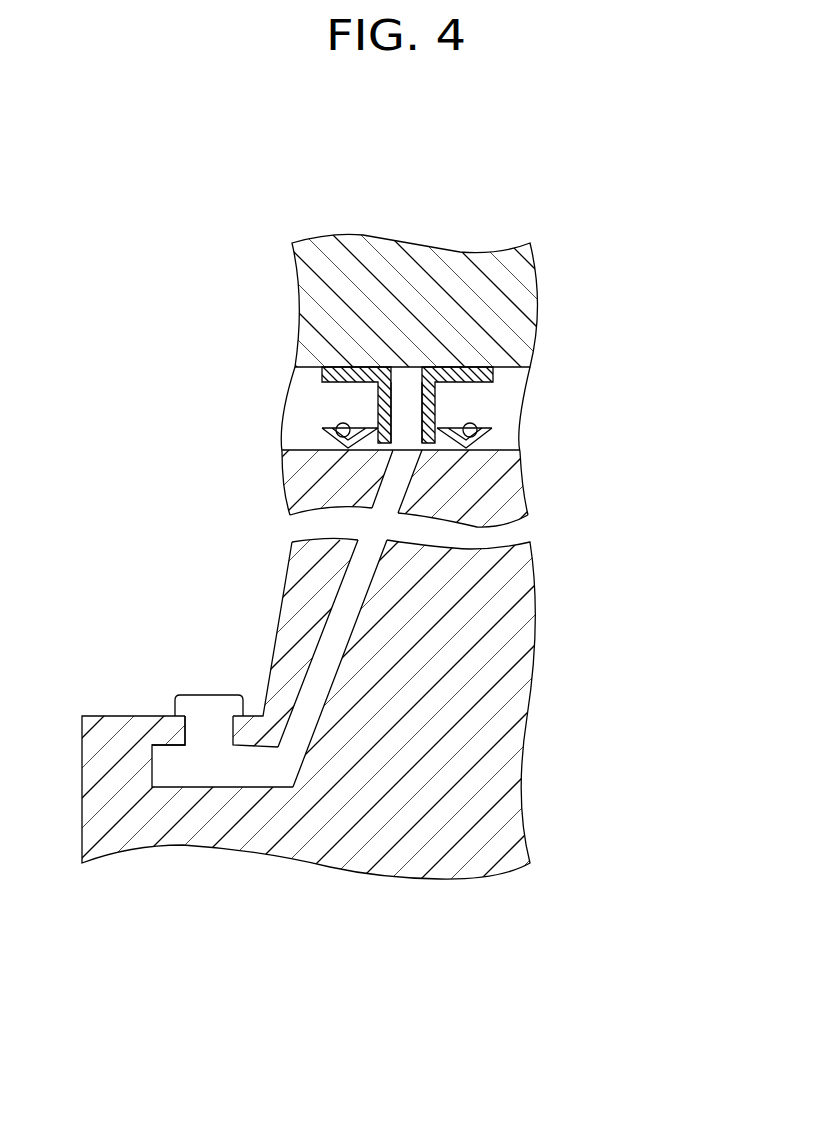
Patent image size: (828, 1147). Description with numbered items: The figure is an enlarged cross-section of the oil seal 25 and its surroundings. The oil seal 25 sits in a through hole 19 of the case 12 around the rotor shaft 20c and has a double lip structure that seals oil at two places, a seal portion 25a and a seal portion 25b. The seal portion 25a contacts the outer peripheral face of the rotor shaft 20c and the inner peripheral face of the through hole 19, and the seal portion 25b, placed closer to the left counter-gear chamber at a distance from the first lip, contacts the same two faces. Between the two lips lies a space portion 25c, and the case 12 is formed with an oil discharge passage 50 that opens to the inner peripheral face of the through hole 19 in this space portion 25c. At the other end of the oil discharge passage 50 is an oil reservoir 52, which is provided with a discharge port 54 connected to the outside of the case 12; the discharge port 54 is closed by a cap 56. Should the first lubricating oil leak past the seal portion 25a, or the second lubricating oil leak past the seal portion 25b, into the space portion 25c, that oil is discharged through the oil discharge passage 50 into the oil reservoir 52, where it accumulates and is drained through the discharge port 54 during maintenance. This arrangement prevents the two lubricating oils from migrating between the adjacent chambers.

The case 12 is at (430, 817).
The through hole 19 is at (500, 448).
The rotor shaft 20c is at (493, 280).
The oil seal 25 is at (365, 289).
The seal portion 25a is at (382, 403).
The seal portion 25b is at (437, 407).
The space portion 25c is at (405, 393).
The oil discharge passage 50 is at (396, 484).
The oil reservoir 52 is at (212, 767).
The discharge port 54 is at (202, 737).
The cap 56 is at (210, 705).